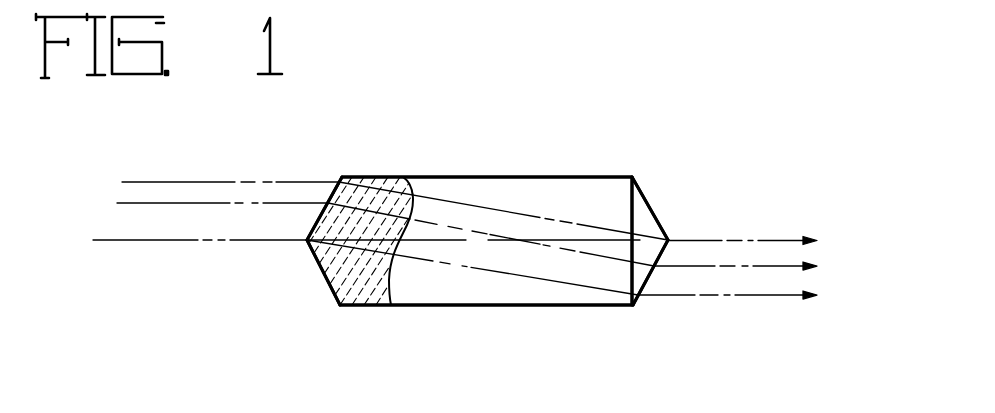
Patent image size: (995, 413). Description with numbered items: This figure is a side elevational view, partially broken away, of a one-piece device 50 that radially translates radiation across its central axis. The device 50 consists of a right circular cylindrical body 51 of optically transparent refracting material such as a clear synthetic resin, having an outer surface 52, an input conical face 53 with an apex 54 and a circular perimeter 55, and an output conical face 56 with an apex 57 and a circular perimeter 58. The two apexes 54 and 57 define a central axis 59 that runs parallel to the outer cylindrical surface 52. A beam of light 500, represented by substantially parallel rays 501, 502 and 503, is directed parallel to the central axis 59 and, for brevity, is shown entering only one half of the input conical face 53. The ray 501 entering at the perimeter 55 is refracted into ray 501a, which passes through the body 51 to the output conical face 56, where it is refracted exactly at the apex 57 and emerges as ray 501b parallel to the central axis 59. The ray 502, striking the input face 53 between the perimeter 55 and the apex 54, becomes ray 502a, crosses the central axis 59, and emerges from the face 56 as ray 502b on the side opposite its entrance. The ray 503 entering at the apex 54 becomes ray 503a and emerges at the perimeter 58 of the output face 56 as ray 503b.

The device 50 is at (463, 151).
The right circular cylindrical body 51 is at (416, 176).
The outer surface 52 is at (572, 176).
The input conical face 53 is at (318, 266).
The apex 54 is at (303, 242).
The perimeter 55 is at (340, 306).
The output conical face 56 is at (646, 201).
The apex 57 is at (669, 240).
The perimeter 58 is at (633, 176).
The central axis 59 is at (472, 241).
The beam of light 500 is at (200, 175).
The ray 501 is at (133, 181).
The ray 502 is at (127, 202).
The ray 503 is at (127, 238).
The refracted ray 501a is at (598, 197).
The ray 502a is at (448, 224).
The ray 503a is at (498, 274).
The ray 501b is at (792, 233).
The ray 502b is at (788, 258).
The ray 503b is at (785, 290).